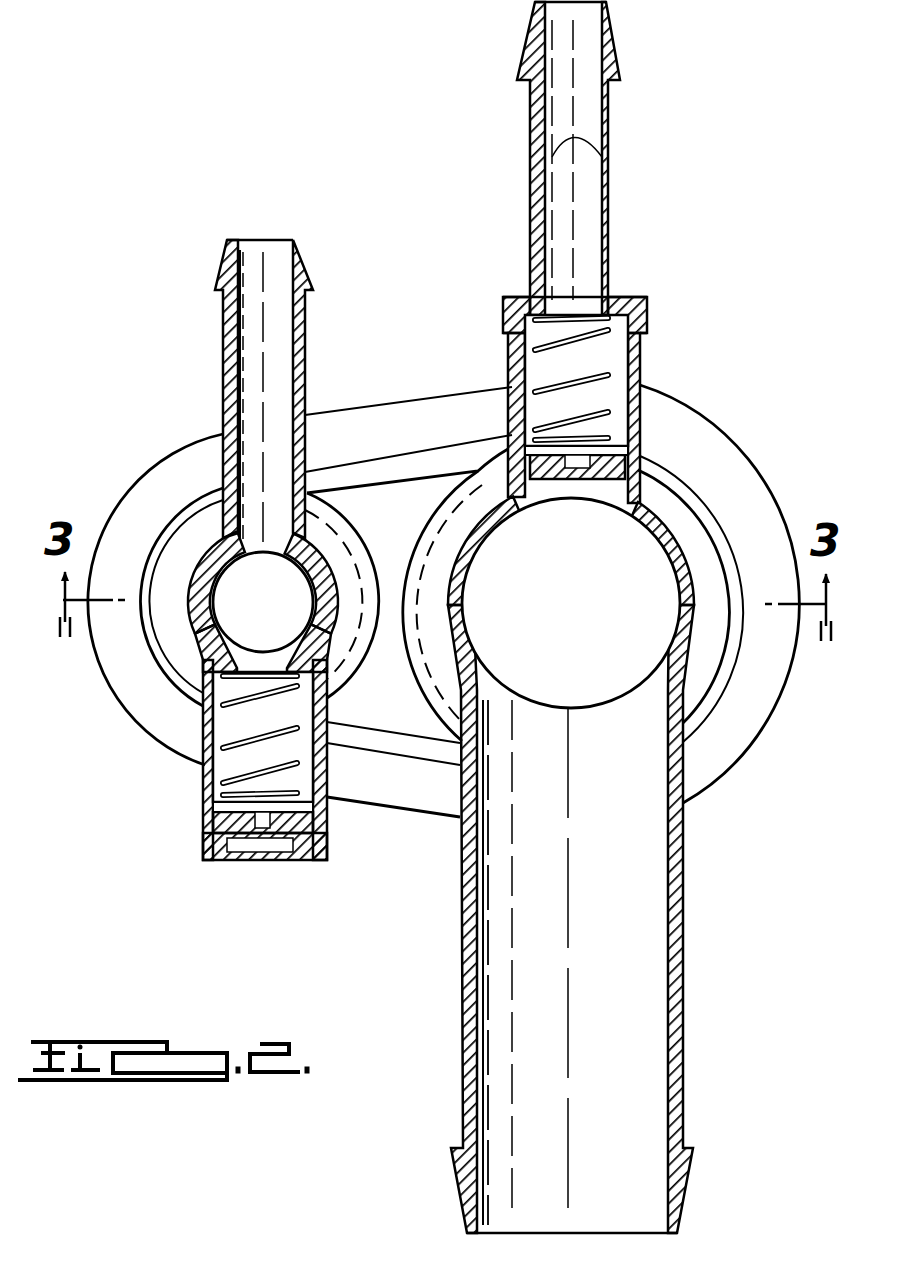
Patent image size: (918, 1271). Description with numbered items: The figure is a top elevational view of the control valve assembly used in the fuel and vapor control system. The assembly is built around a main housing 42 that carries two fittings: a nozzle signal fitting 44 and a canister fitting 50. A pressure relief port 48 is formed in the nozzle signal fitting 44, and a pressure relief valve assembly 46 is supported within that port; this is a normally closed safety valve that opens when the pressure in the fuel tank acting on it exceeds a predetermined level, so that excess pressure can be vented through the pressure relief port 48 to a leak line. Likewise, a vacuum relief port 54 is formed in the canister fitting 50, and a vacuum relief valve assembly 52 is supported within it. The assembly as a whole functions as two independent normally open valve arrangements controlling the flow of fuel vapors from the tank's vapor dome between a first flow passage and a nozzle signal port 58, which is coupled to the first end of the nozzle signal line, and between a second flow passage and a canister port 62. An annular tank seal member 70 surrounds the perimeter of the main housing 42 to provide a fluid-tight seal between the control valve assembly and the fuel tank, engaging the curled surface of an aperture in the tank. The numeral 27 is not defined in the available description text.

The valve assembly housing 27 is at (721, 282).
The main housing 42 is at (395, 717).
The nozzle signal fitting 44 is at (689, 903).
The pressure relief valve assembly 46 is at (642, 358).
The pressure relief port 48 is at (556, 480).
The canister fitting 50 is at (310, 351).
The vacuum relief valve assembly 52 is at (209, 790).
The vacuum relief port 54 is at (253, 648).
The nozzle signal port 58 is at (672, 968).
The canister port 62 is at (240, 336).
The tank seal member 70 is at (712, 775).